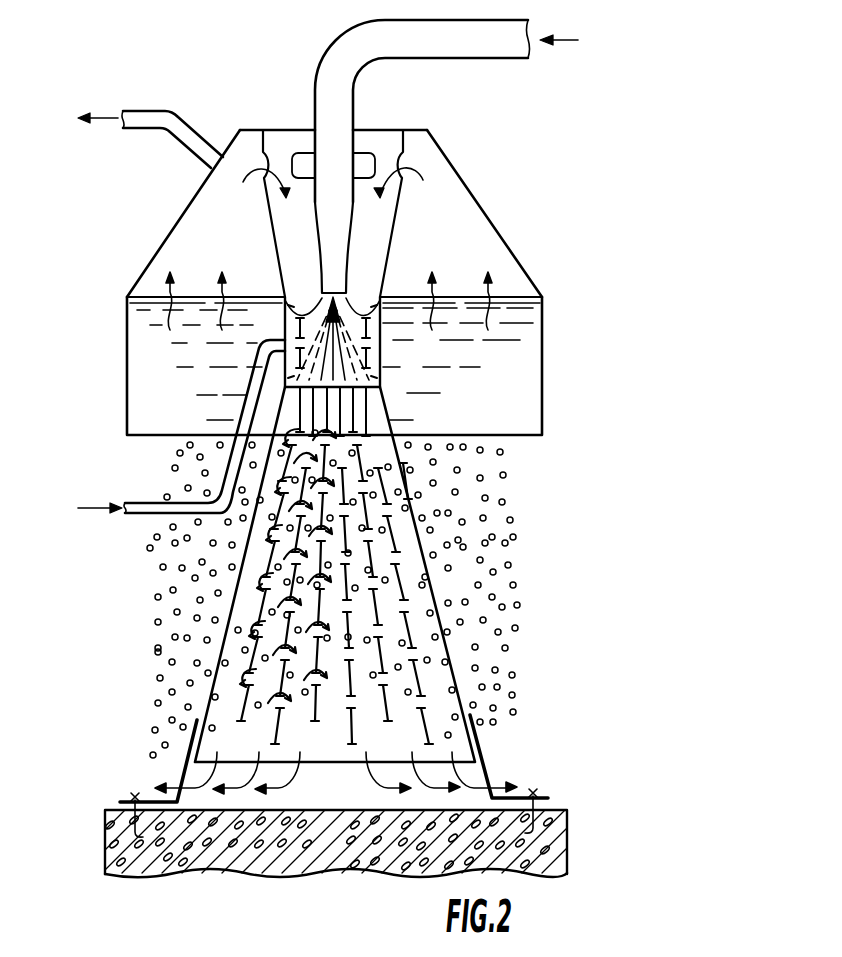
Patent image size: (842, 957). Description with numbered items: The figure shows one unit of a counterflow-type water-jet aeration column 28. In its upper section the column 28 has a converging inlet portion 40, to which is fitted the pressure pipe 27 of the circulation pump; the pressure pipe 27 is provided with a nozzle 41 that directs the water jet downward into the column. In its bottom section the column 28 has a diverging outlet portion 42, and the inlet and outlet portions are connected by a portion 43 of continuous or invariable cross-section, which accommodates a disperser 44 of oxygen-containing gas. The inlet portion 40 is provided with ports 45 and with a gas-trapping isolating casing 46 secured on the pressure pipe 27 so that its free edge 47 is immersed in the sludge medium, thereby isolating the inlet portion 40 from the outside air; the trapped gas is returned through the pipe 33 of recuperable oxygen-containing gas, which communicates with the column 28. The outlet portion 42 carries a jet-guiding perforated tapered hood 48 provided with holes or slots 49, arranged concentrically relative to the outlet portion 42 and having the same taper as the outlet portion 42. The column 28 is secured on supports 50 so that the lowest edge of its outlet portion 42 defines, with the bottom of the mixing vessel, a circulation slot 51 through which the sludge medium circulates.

The pressure pipe 27 is at (448, 62).
The counterflow-type water-jet aeration column 28 is at (158, 221).
The pipe of recuperable oxygen-containing gas 33 is at (139, 108).
The converging inlet portion 40 is at (393, 263).
The nozzle 41 is at (347, 228).
The diverging outlet portion 42 is at (454, 678).
The portion of continuous cross-section 43 is at (384, 378).
The disperser of oxygen-containing gas 44 is at (288, 331).
The ports 45 is at (243, 182).
The gas-trapping isolating casing 46 is at (488, 204).
The free edge 47 is at (544, 385).
The jet-guiding perforated tapered hood 48 is at (406, 607).
The holes or slots 49 is at (266, 585).
The supports 50 is at (478, 748).
The circulation slot 51 is at (335, 790).